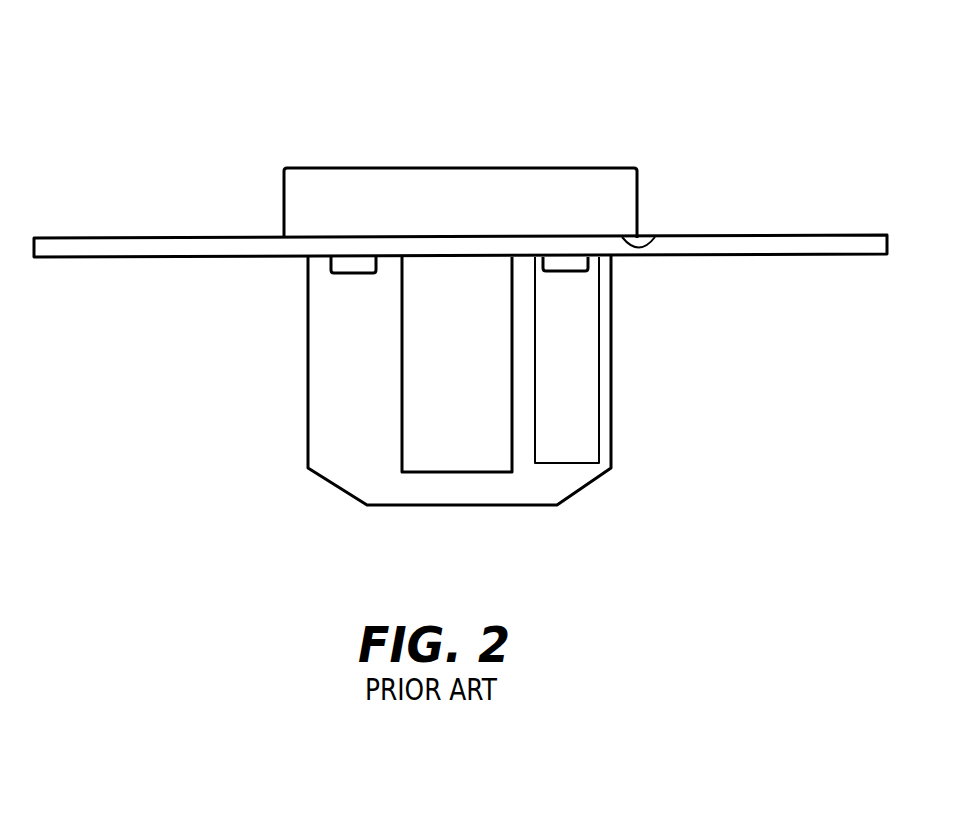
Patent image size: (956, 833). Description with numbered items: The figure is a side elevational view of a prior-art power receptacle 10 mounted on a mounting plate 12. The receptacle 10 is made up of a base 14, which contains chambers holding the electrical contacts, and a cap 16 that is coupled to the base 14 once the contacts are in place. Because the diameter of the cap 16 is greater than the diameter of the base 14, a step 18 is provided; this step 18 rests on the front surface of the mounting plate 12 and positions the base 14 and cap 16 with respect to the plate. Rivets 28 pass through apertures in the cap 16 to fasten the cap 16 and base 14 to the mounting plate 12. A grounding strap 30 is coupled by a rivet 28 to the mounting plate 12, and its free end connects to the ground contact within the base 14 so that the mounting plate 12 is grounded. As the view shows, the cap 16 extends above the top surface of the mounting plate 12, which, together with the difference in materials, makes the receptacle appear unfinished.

The power receptacle 10 is at (546, 95).
The mounting plate 12 is at (797, 236).
The base 14 is at (612, 388).
The cap 16 is at (637, 197).
The step 18 is at (655, 237).
The rivets 28 is at (578, 264).
The grounding strap 30 is at (574, 432).